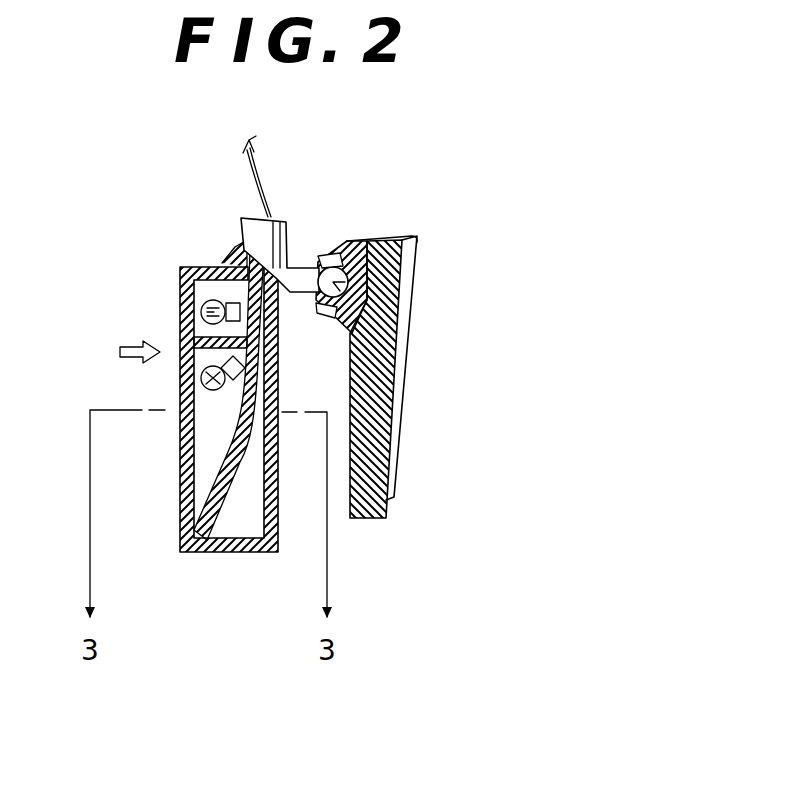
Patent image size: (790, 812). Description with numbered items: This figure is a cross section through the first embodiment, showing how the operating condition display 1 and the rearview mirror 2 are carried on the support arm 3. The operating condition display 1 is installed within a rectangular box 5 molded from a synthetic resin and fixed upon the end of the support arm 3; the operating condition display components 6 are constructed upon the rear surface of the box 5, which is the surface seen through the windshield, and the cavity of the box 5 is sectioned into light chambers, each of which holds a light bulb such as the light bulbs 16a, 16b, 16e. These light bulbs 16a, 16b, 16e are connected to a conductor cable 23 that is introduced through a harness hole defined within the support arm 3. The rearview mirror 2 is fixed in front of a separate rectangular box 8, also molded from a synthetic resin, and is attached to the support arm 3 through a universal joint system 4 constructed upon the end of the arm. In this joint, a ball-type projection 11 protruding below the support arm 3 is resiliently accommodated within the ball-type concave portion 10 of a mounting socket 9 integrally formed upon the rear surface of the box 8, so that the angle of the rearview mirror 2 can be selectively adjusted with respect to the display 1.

The operating condition display 1 is at (202, 559).
The rearview mirror 2 is at (399, 369).
The support arm 3 is at (291, 218).
The universal joint system 4 is at (318, 319).
The box 5 is at (279, 490).
The operating condition display components 6 is at (128, 352).
The rectangular box 8 is at (363, 523).
The mounting socket 9 is at (321, 253).
The ball-type concave portion 10 is at (338, 253).
The ball-type projection 11 is at (368, 282).
The light bulb 16a is at (201, 379).
The light bulb 16b is at (201, 379).
The light bulb 16e is at (201, 308).
The conductor cable 23 is at (246, 167).